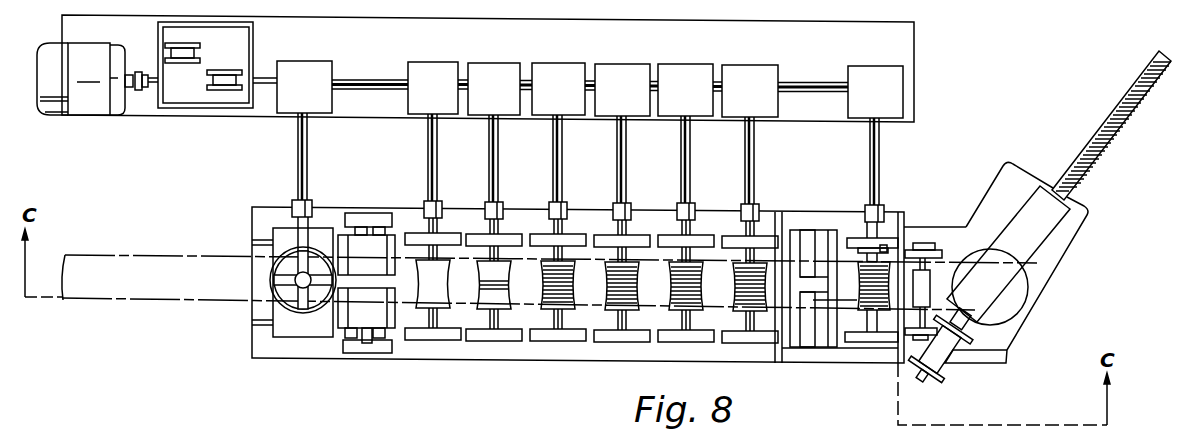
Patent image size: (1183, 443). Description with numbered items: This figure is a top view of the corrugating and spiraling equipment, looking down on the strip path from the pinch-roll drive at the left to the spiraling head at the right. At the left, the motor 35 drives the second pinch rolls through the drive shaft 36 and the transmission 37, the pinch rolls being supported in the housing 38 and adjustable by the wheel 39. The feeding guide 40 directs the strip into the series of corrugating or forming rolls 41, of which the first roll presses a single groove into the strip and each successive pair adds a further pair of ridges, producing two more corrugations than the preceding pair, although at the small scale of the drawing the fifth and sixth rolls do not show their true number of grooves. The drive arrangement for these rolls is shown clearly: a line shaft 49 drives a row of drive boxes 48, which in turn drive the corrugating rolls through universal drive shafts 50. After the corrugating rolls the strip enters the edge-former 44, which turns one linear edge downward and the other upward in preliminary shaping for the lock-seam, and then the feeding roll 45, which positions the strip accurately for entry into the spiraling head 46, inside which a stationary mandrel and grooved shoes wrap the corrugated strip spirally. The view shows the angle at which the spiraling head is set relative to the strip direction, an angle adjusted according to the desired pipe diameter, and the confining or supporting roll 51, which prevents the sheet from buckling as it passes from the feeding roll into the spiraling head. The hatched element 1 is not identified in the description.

The blade 1 is at (1120, 133).
The motor 35 is at (92, 43).
The drive shaft 36 is at (145, 71).
The transmission 37 is at (242, 45).
The housing 38 is at (285, 235).
The wheel 39 is at (288, 306).
The feeding guide 40 is at (367, 219).
The corrugating rolls 41 is at (478, 271).
The edge-former 44 is at (803, 338).
The feeding roll 45 is at (862, 297).
The spiraling head 46 is at (1005, 277).
The drive boxes 48 is at (477, 63).
The line shaft 49 is at (375, 79).
The universal drive shafts 50 is at (490, 172).
The confining or supporting roll 51 is at (924, 292).